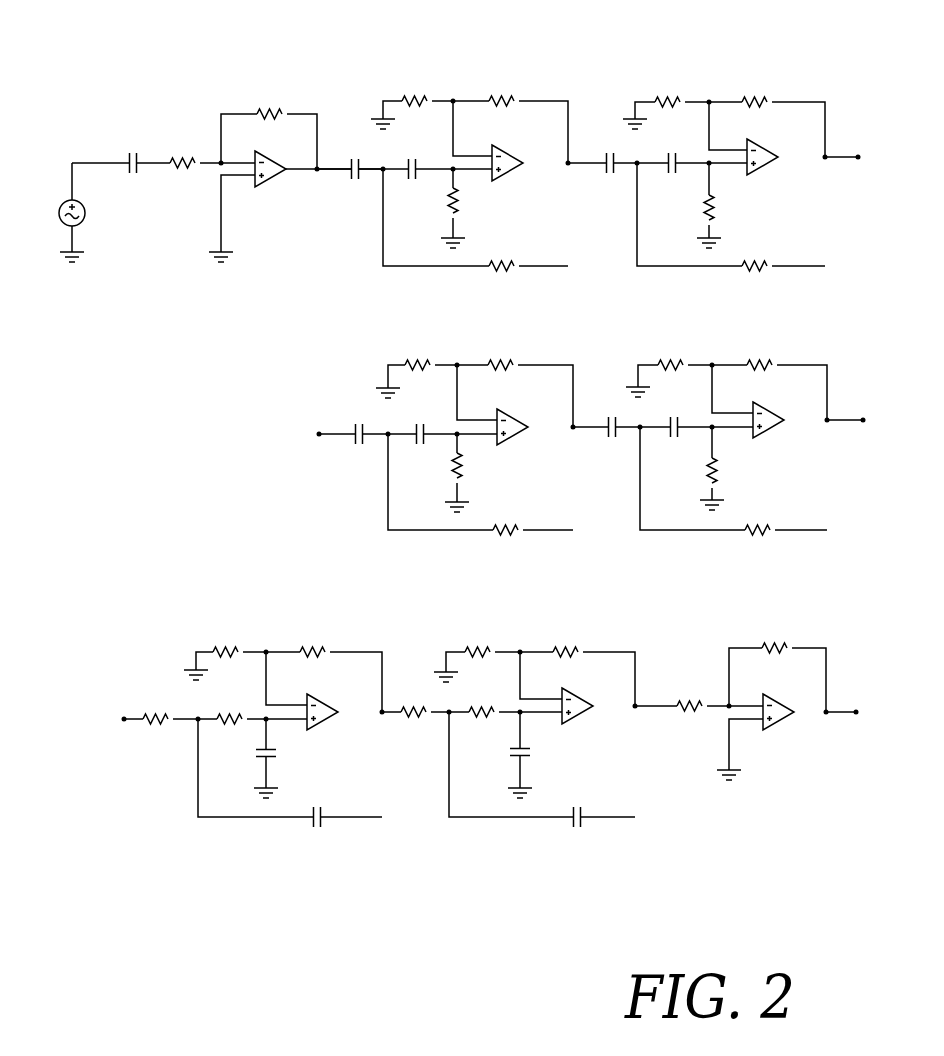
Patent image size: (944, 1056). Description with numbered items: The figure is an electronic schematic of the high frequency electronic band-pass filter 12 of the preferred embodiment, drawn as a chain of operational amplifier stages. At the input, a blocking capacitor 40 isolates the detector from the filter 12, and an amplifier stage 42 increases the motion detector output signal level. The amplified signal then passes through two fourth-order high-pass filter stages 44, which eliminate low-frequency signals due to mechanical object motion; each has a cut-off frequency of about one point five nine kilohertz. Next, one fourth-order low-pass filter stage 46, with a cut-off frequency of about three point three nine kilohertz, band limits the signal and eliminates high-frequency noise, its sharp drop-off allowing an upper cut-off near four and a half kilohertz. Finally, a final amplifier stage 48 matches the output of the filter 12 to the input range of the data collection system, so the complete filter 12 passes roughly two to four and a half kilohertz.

The electronic band-pass filter 12 is at (337, 885).
The blocking capacitor 40 is at (123, 133).
The amplifier stage 42 is at (235, 114).
The fourth-order high-pass filter stages 44 is at (778, 267).
The fourth-order low-pass filter stage 46 is at (362, 652).
The final amplifier stage 48 is at (813, 648).